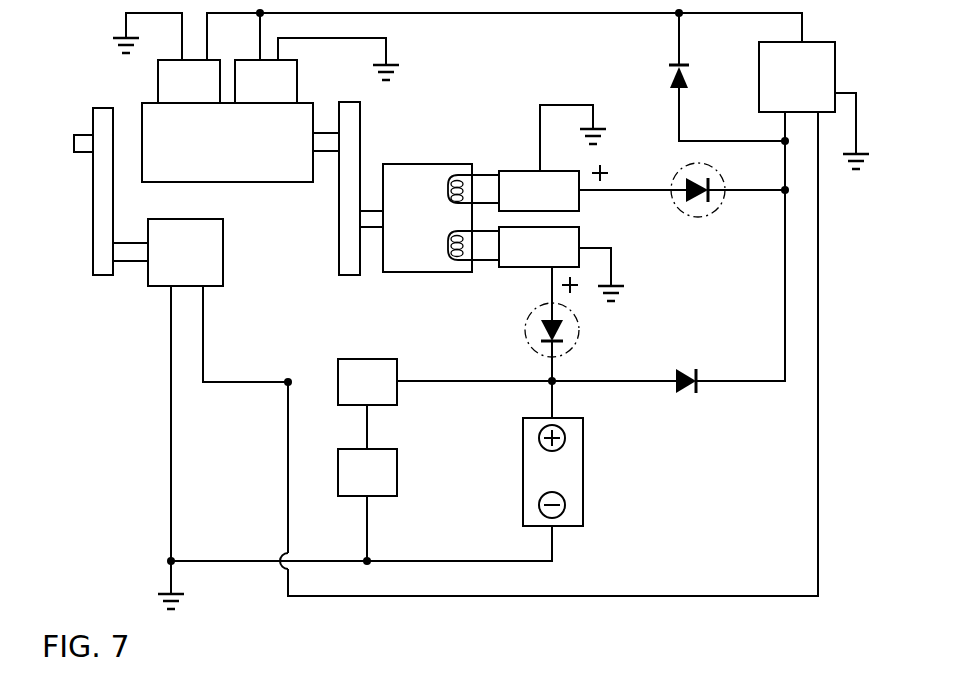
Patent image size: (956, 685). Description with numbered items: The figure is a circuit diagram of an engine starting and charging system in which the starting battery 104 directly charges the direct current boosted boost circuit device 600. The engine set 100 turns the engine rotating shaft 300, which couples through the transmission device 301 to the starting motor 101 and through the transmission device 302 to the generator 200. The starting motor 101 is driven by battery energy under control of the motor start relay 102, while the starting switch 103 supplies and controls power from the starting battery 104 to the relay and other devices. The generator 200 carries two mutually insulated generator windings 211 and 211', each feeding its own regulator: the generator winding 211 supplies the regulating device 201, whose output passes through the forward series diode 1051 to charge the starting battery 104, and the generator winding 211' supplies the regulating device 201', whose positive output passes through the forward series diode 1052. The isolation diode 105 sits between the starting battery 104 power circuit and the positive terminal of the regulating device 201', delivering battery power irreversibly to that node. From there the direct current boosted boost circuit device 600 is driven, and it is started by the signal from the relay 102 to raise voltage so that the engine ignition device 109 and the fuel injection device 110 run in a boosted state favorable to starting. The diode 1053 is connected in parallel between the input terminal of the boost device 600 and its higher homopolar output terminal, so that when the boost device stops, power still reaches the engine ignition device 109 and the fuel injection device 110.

The engine set 100 is at (227, 142).
The starting motor 101 is at (185, 252).
The motor start relay 102 is at (367, 382).
The starting switch 103 is at (367, 472).
The starting battery 104 is at (553, 472).
The isolation diode 105 is at (686, 372).
The diode 1051 is at (547, 333).
The diode 1052 is at (683, 213).
The diode 1053 is at (671, 86).
The engine ignition device 109 is at (266, 81).
The fuel injection device 110 is at (189, 81).
The generator 200 is at (427, 218).
The regulating device 201 is at (539, 247).
The regulating device 201' is at (539, 191).
The generator winding 211 is at (454, 281).
The generator winding 211' is at (467, 155).
The engine rotating shaft 300 is at (73, 144).
The transmission device 301 is at (106, 107).
The transmission device 302 is at (349, 240).
The direct current boosted boost circuit device 600 is at (797, 77).